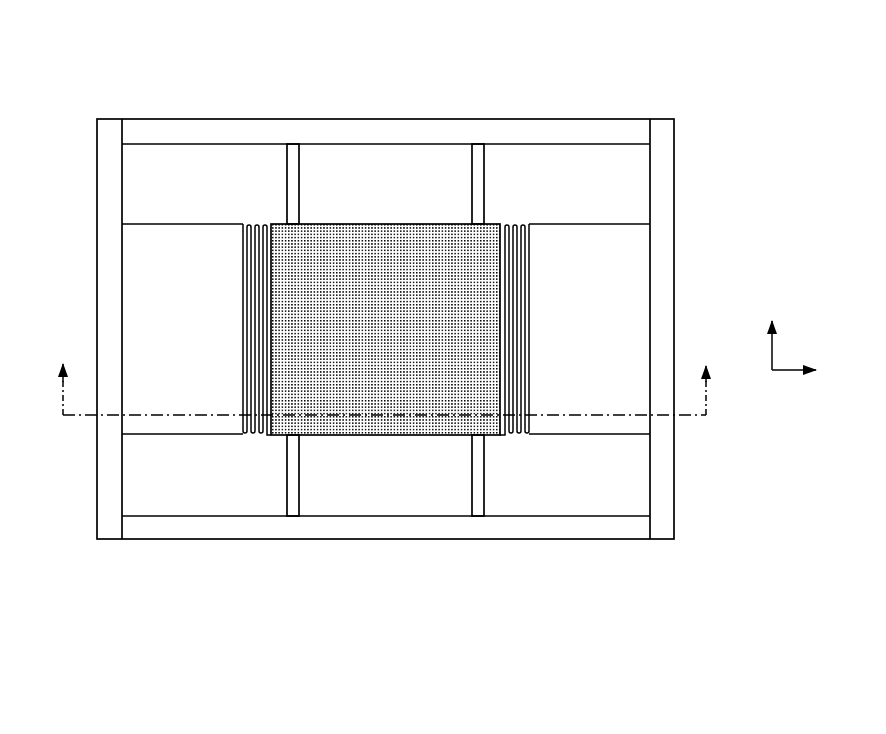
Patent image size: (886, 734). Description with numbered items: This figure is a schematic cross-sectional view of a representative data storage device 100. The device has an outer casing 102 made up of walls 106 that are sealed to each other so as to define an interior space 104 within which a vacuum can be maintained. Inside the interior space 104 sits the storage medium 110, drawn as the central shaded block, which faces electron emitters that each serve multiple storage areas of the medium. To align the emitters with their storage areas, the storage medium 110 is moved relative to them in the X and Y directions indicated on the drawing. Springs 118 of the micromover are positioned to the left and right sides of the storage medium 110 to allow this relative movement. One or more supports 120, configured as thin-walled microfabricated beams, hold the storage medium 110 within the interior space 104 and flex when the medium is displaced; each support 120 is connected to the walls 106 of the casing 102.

The data storage device 100 is at (752, 66).
The outer casing 102 is at (693, 176).
The interior space 104 is at (217, 494).
The walls 106 is at (558, 128).
The storage medium 110 is at (404, 340).
The springs 118 is at (230, 359).
The supports 120 is at (299, 180).